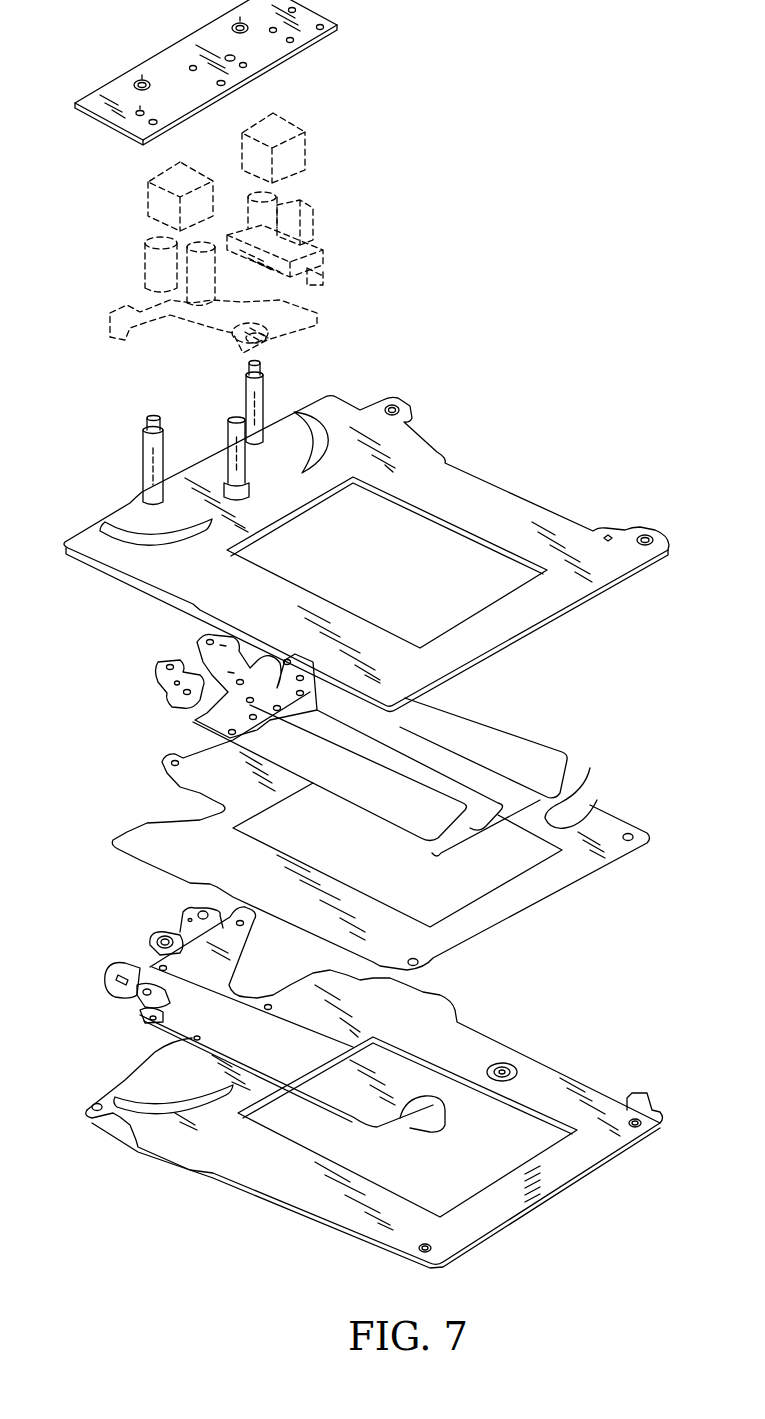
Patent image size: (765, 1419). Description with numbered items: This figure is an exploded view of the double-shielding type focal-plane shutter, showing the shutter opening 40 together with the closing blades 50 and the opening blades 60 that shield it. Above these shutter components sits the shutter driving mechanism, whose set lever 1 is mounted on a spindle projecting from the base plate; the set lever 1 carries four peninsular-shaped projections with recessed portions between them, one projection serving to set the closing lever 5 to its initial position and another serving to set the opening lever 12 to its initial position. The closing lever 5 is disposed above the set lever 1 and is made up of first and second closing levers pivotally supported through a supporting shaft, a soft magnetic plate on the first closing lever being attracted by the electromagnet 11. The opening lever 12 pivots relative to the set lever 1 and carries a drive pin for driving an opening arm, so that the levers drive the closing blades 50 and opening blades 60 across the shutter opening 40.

The set lever 1 is at (340, 320).
The closing lever 5 is at (341, 242).
The electromagnet 11 is at (317, 126).
The opening lever 12 is at (117, 282).
The shutter opening 40 is at (457, 527).
The closing blades 50 is at (567, 817).
The opening blades 60 is at (497, 1108).